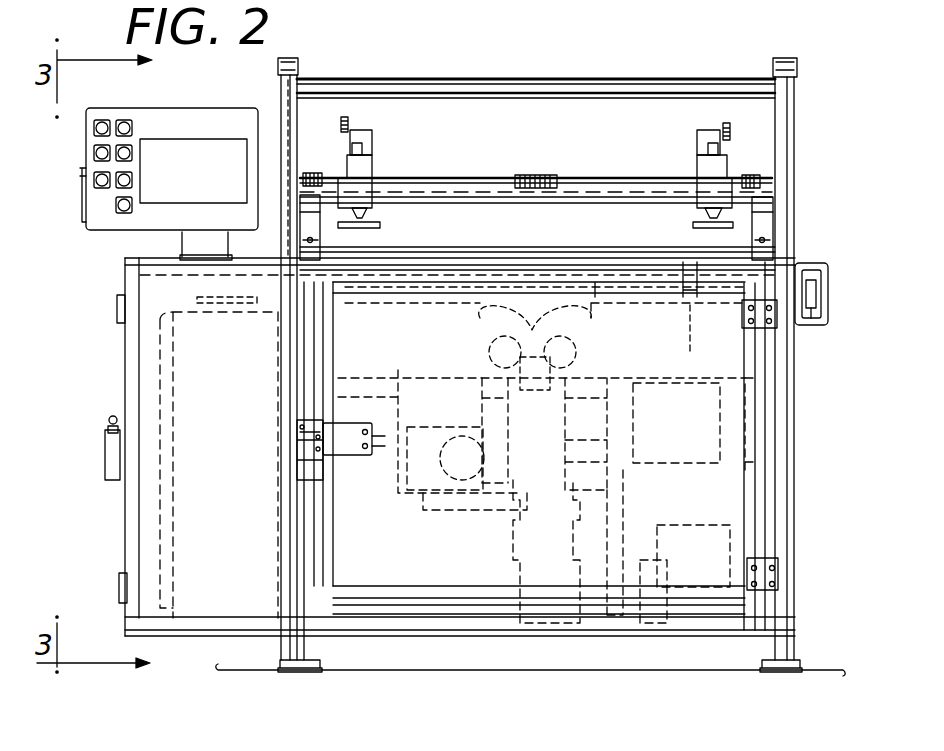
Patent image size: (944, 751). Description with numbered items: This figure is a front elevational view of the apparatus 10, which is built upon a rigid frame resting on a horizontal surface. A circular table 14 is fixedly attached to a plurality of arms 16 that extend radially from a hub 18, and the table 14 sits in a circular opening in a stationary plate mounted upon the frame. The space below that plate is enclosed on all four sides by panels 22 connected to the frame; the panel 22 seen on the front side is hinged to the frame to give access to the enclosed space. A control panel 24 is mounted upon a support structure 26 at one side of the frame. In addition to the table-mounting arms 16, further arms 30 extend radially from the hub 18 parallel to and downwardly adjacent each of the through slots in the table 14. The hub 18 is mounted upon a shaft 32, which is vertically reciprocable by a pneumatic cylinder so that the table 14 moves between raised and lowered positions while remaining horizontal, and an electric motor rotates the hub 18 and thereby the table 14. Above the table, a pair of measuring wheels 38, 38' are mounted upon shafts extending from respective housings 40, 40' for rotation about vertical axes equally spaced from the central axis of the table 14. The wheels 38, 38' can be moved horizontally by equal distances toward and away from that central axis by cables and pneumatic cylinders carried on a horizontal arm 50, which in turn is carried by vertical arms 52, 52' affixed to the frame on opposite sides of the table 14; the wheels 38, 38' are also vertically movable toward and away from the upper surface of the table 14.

The apparatus 10 is at (802, 374).
The circular table 14 is at (461, 270).
The arms 16 is at (539, 315).
The hub 18 is at (612, 336).
The panels 22 is at (730, 497).
The control panel 24 is at (172, 125).
The support structure 26 is at (127, 288).
The arms 30 is at (430, 304).
The shaft 32 is at (519, 348).
The measuring wheel 38 is at (387, 231).
The measuring wheel 38' is at (682, 231).
The housing 40 is at (389, 167).
The housing 40' is at (673, 170).
The horizontal arm 50 is at (617, 205).
The vertical arm 52 is at (281, 365).
The vertical arm 52' is at (794, 365).